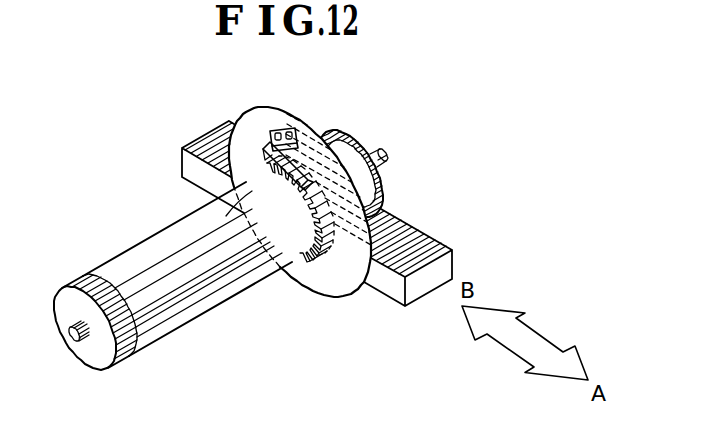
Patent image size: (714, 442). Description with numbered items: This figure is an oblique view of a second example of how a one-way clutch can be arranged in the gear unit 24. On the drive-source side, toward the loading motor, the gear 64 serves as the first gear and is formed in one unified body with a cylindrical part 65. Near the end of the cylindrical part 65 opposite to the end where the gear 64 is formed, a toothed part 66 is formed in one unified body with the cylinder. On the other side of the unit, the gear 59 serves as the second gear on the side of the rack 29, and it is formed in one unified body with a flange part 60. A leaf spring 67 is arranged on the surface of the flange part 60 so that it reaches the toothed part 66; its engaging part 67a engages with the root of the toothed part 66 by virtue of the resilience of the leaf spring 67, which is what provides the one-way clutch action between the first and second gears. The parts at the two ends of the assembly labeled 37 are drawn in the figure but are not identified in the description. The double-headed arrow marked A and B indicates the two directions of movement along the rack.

The gear unit 24 is at (408, 137).
The rack 29 is at (388, 291).
The shaft stub 37 is at (72, 328).
The gear 59 is at (346, 138).
The flange part 60 is at (350, 297).
The gear 64 is at (128, 347).
The cylindrical part 65 is at (205, 305).
The toothed part 66 is at (317, 260).
The leaf spring 67 is at (279, 157).
The engaging part 67a is at (238, 208).